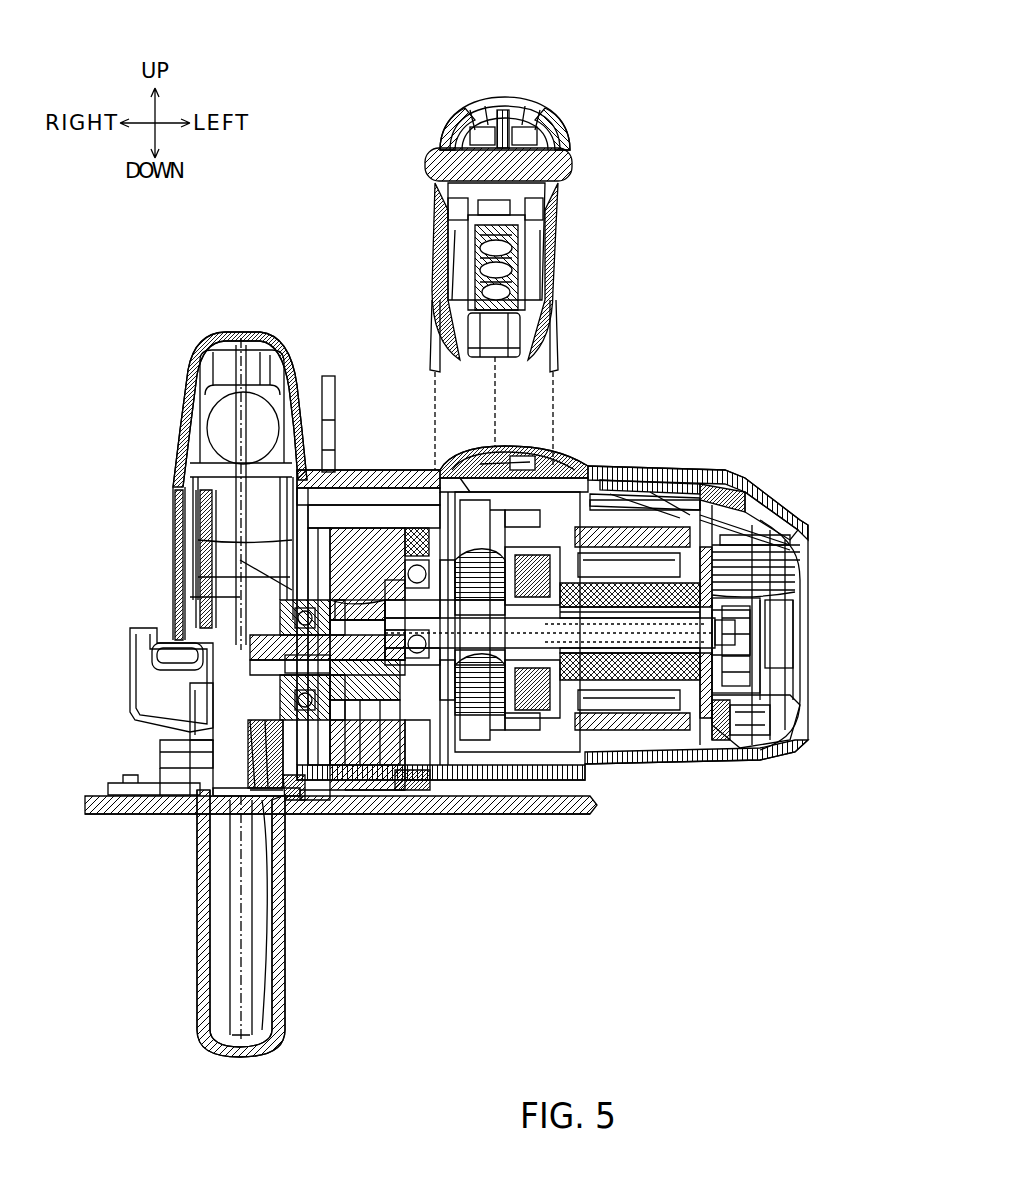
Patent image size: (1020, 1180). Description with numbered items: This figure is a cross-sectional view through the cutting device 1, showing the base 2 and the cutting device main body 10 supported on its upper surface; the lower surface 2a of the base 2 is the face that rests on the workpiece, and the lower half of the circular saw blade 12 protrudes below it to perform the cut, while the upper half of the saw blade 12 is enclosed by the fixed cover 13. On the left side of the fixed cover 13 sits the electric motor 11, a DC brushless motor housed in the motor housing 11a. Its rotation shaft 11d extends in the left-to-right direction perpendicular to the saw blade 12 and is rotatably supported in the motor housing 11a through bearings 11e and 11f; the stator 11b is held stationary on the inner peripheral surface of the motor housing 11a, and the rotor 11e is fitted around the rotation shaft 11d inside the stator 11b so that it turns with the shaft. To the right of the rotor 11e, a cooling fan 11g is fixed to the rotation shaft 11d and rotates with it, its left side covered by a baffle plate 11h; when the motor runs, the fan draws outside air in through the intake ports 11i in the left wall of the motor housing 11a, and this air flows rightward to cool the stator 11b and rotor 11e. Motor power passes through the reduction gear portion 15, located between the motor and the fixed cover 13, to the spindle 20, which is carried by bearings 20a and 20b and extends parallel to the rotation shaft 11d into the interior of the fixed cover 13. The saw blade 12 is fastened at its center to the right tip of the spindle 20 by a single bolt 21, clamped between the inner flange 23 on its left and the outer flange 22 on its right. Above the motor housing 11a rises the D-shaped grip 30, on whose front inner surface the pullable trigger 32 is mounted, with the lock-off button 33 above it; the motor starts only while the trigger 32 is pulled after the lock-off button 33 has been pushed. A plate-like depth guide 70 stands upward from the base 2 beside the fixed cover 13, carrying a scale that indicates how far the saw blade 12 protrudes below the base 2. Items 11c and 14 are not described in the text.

The cutting device 1 is at (773, 114).
The base 2 is at (607, 808).
The lower surface 2a is at (548, 816).
The cutting device main body 10 is at (599, 210).
The electric motor 11 is at (647, 459).
The motor housing 11a is at (668, 478).
The stator 11b is at (722, 492).
The intake port 11c is at (805, 556).
The rotation shaft 11d is at (790, 640).
The rotor 11e is at (802, 592).
The bearing 11f is at (385, 528).
The cooling fan 11g is at (420, 526).
The baffle plate 11h is at (505, 452).
The intake ports 11i is at (790, 696).
The circular saw blade 12 is at (236, 524).
The fixed cover 13 is at (200, 352).
The movable cover 14 is at (200, 1015).
The reduction gear portion 15 is at (372, 820).
The spindle 20 is at (345, 800).
The bearing 20a is at (405, 792).
The bearing 20b is at (312, 800).
The bolt 21 is at (172, 710).
The outer flange 22 is at (192, 757).
The inner flange 23 is at (265, 804).
The grip 30 is at (525, 95).
The trigger 32 is at (512, 340).
The lock-off button 33 is at (575, 164).
The depth guide 70 is at (330, 376).